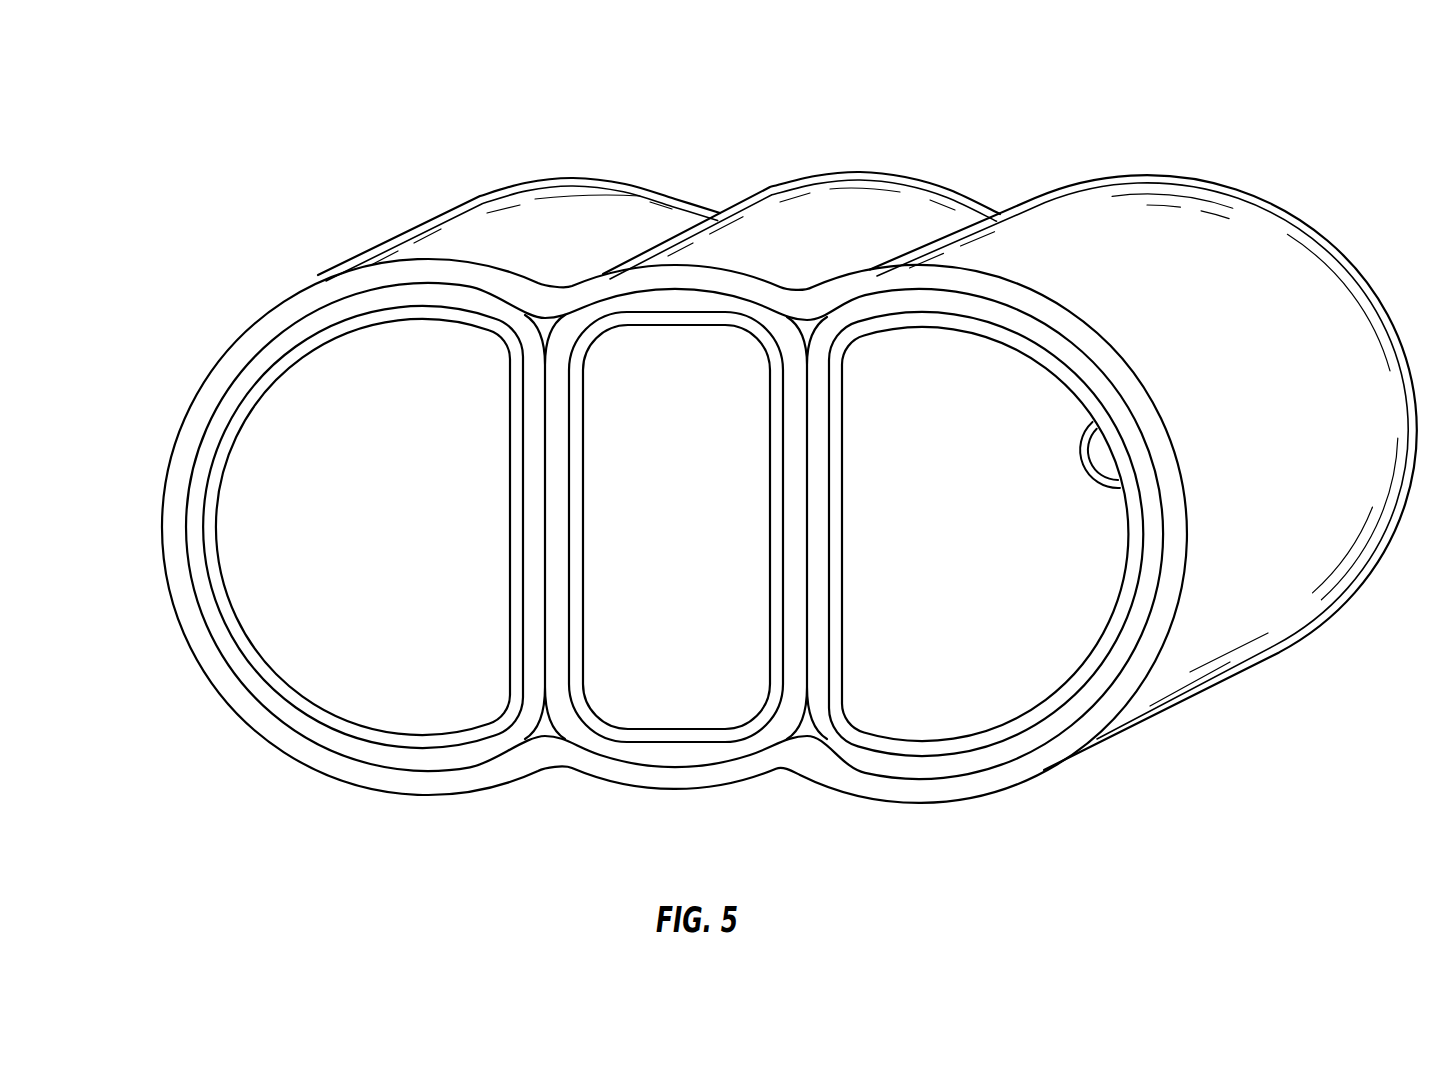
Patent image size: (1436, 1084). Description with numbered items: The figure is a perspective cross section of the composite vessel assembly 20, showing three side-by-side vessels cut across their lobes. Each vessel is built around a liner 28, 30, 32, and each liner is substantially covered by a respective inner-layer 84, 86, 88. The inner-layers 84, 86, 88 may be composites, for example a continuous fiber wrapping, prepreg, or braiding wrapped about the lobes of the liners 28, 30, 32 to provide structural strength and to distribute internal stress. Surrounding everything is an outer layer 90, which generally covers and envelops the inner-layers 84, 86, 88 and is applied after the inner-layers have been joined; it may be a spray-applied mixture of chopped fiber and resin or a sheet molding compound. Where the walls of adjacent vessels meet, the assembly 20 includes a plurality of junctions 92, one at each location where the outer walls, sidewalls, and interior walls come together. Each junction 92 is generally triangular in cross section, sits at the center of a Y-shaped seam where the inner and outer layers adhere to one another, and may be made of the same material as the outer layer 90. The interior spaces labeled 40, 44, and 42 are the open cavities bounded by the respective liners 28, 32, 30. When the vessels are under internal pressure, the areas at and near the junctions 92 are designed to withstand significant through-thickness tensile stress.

The composite vessel assembly 20 is at (1082, 159).
The liner 28 is at (313, 697).
The liner 30 is at (868, 725).
The liner 32 is at (627, 729).
The first chamber 40 is at (407, 617).
The second chamber 42 is at (972, 617).
The third chamber 44 is at (686, 617).
The inner-layer 84 is at (332, 739).
The inner-layer 86 is at (988, 758).
The inner-layer 88 is at (713, 758).
The outer layer 90 is at (468, 792).
The junction 92 is at (543, 332).